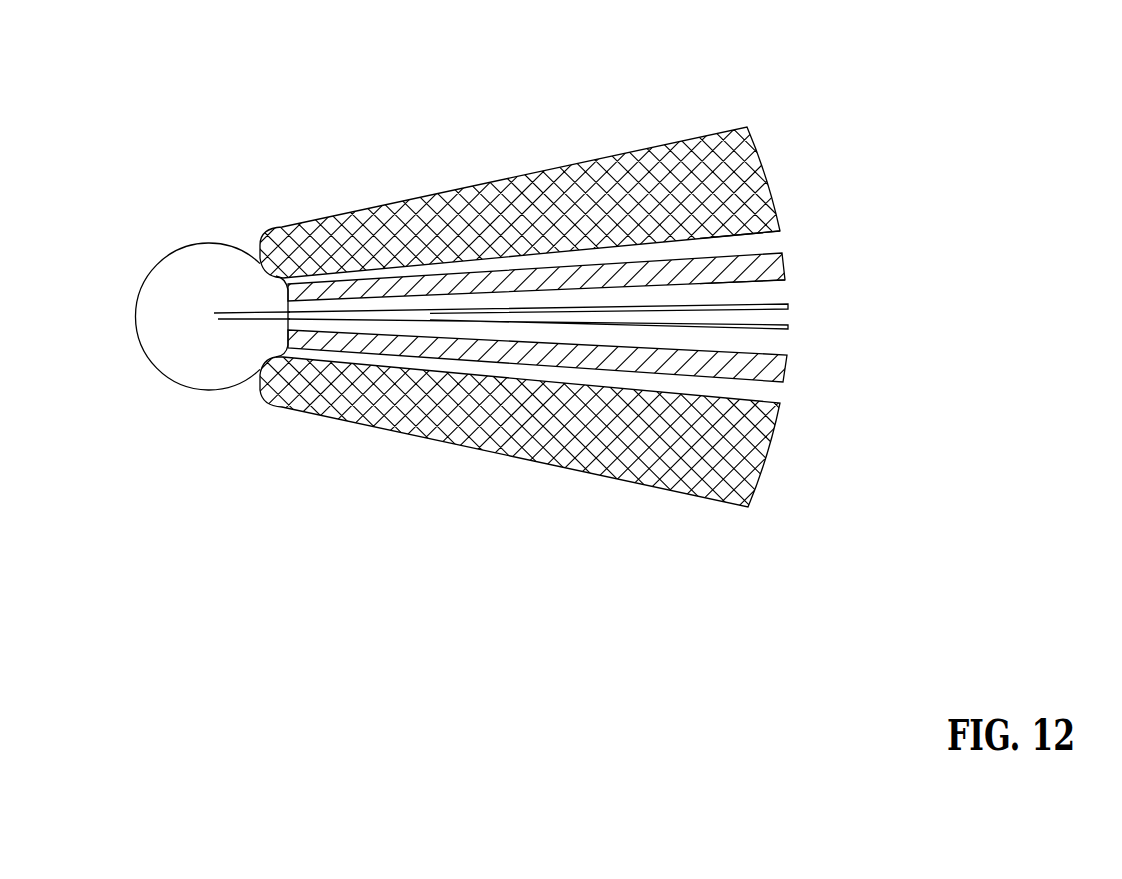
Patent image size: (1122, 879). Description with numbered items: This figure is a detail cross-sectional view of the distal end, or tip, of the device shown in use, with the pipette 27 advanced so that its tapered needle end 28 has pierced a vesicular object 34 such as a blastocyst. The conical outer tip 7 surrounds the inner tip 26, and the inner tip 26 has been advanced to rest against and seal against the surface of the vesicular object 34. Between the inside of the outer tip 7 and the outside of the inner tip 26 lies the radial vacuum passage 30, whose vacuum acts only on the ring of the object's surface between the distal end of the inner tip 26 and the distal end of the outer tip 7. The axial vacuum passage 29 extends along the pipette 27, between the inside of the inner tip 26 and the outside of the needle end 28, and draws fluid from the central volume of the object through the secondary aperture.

The outer tip 7 is at (368, 235).
The inner tip 26 is at (445, 282).
The pipette 27 is at (520, 309).
The needle end 28 is at (212, 313).
The axial vacuum passage 29 is at (782, 293).
The radial vacuum passage 30 is at (777, 240).
The ball lens 34 is at (195, 243).